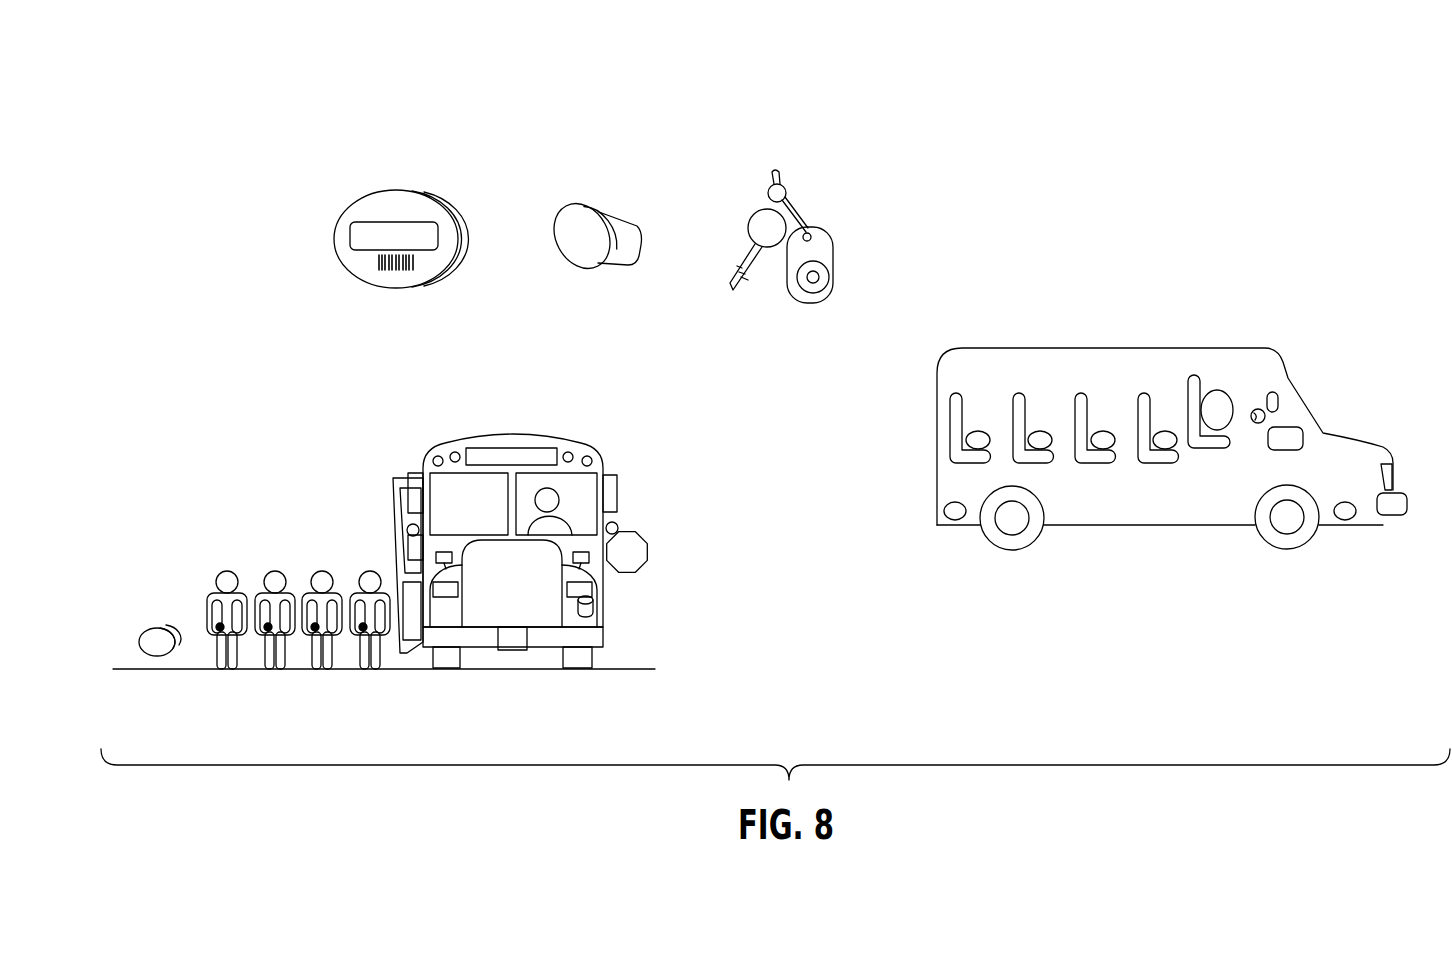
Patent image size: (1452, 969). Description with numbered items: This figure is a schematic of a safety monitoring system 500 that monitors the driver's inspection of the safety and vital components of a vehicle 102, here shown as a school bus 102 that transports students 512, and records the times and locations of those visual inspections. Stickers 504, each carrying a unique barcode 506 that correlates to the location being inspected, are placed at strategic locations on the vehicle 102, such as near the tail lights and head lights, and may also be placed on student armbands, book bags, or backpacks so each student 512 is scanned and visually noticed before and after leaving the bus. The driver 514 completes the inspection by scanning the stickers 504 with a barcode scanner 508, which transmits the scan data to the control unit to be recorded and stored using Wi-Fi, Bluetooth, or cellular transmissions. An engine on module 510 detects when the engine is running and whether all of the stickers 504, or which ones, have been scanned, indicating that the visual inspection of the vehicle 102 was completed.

The safety monitoring system 500 is at (944, 158).
The sticker 504 is at (778, 435).
The barcode 506 is at (378, 263).
The barcode scanner 508 is at (826, 231).
The engine on module 510 is at (623, 224).
The students 512 is at (222, 630).
The driver 514 is at (560, 506).
The vehicle 102 is at (603, 465).